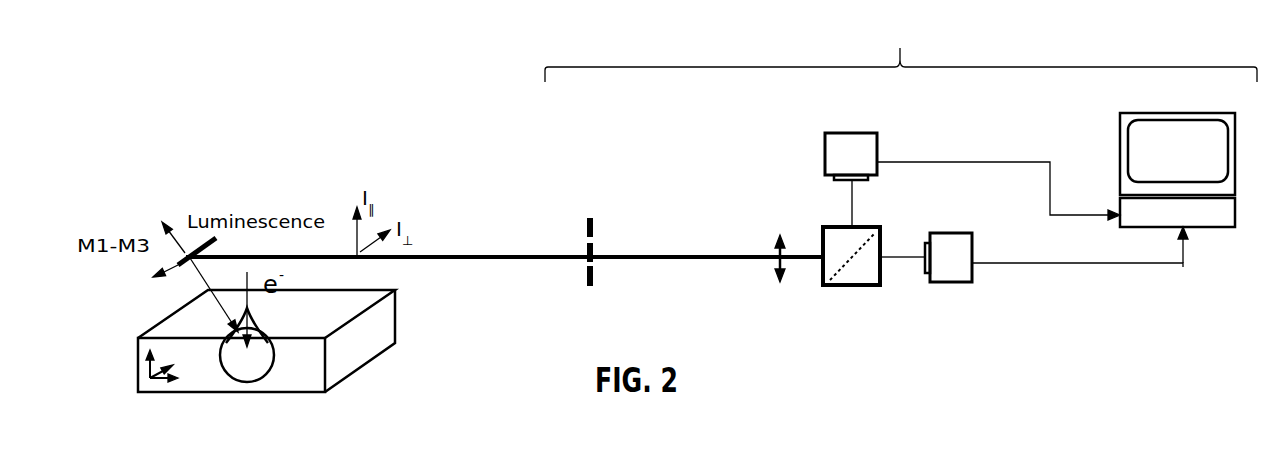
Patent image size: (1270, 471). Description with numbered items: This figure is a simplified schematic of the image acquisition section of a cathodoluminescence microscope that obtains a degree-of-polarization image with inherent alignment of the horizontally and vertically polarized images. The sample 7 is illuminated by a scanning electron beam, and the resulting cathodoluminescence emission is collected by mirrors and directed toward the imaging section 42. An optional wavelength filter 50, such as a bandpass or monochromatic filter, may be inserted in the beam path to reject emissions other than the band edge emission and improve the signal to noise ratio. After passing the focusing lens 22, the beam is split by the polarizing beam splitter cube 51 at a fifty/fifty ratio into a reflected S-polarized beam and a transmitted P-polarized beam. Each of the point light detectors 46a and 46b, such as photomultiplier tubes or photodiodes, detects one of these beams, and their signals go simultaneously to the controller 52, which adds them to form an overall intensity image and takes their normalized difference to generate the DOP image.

The sample 7 is at (340, 343).
The focusing lens 22 is at (777, 227).
The imaging section 42 is at (901, 49).
The light detector 46a is at (851, 156).
The light detector 46b is at (948, 257).
The wavelength filter 50 is at (590, 213).
The polarizing beam splitter cube 51 is at (860, 287).
The controller 52 is at (1177, 170).